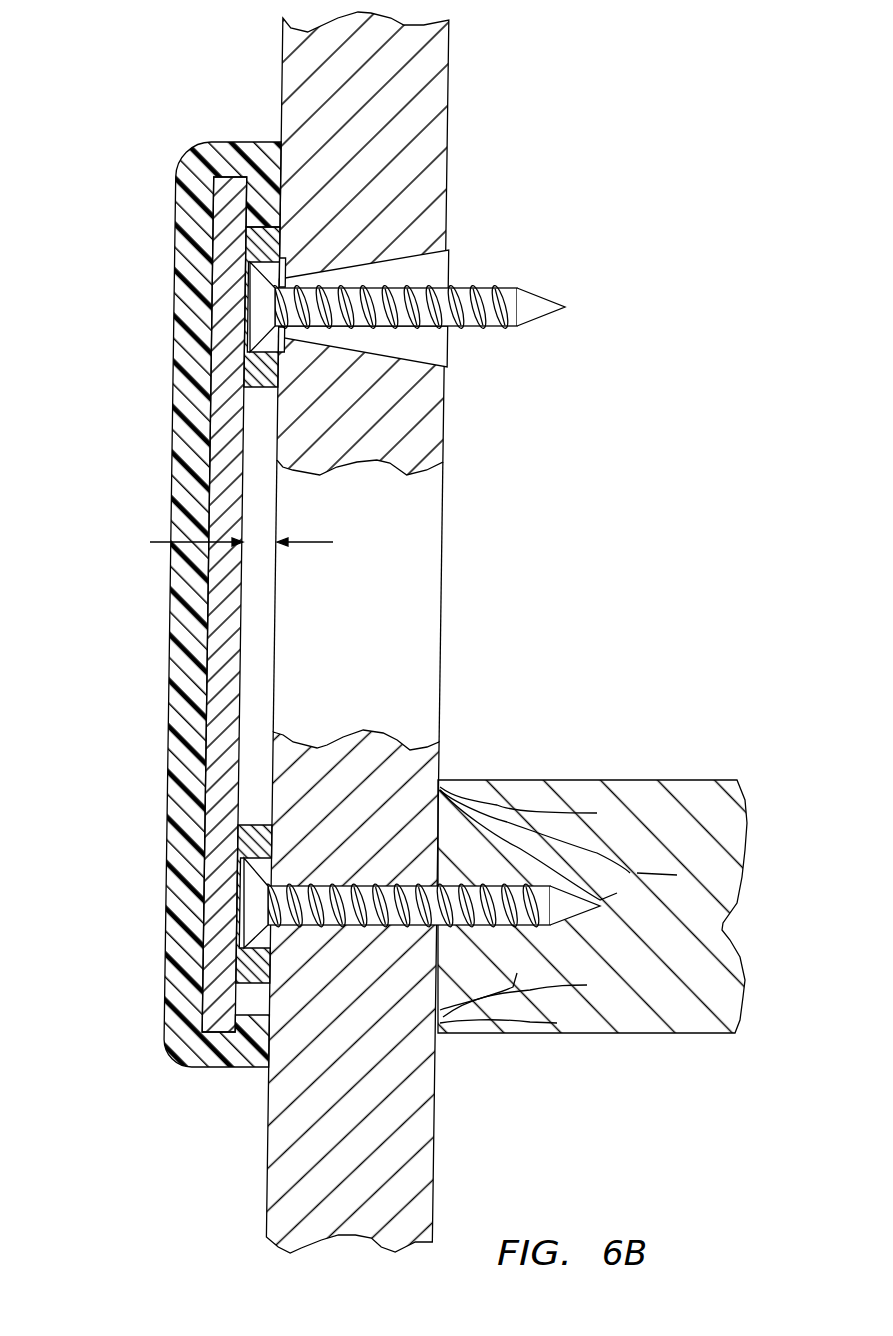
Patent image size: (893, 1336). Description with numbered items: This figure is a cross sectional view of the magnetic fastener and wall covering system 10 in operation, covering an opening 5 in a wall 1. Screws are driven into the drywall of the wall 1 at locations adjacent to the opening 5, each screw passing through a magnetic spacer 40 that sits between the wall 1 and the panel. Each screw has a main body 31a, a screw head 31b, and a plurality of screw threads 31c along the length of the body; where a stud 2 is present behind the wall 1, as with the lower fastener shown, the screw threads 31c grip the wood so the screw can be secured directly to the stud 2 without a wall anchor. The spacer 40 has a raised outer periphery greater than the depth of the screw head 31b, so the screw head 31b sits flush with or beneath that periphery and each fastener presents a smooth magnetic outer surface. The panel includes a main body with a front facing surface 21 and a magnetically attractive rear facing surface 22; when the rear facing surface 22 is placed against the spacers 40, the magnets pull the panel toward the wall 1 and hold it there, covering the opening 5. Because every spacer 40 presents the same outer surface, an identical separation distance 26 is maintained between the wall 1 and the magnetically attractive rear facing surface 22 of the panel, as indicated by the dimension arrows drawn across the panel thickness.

The wall 1 is at (428, 72).
The stud 2 is at (706, 798).
The opening 5 is at (376, 602).
The system 10 is at (163, 594).
The front facing surface 21 is at (180, 442).
The magnetically attractive rear facing surface 22 is at (228, 228).
The separation distance 26 is at (160, 543).
The main body 31a is at (431, 652).
The screw head 31b is at (263, 303).
The screw threads 31c is at (537, 930).
The spacer 40 is at (263, 240).